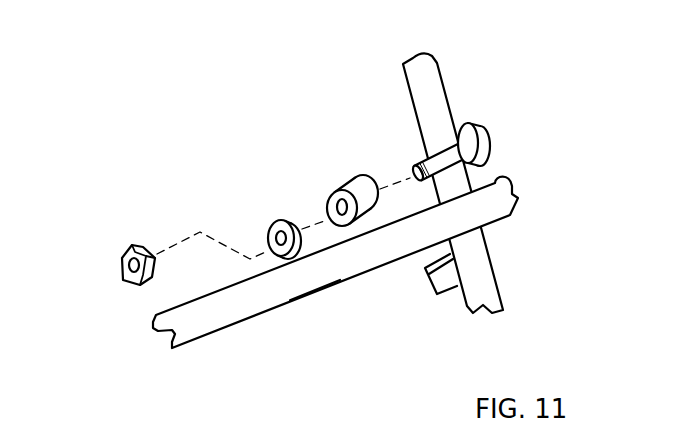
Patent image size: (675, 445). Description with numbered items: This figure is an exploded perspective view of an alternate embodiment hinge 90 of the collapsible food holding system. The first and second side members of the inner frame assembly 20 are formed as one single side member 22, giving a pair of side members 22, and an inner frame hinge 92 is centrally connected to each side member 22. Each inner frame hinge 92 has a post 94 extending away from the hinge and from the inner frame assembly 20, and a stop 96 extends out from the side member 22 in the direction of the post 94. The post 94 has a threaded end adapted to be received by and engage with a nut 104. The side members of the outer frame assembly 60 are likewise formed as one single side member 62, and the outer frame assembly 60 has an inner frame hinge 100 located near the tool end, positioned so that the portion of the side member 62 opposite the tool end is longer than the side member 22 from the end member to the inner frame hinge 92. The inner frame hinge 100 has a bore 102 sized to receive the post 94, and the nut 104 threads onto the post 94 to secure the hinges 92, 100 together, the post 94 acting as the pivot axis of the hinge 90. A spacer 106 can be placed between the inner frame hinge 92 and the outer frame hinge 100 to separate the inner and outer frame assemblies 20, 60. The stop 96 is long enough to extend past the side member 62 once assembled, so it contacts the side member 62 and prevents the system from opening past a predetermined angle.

The hinge 90 is at (330, 220).
The inner frame assembly 20 is at (521, 170).
The side member 22 is at (442, 75).
The outer frame assembly 60 is at (318, 304).
The side member 62 is at (315, 296).
The inner frame hinge 92 is at (483, 127).
The post 94 is at (435, 152).
The stop 96 is at (427, 280).
The inner frame hinge 100 is at (219, 200).
The bore 102 is at (268, 237).
The nut 104 is at (121, 256).
The spacer 106 is at (335, 187).